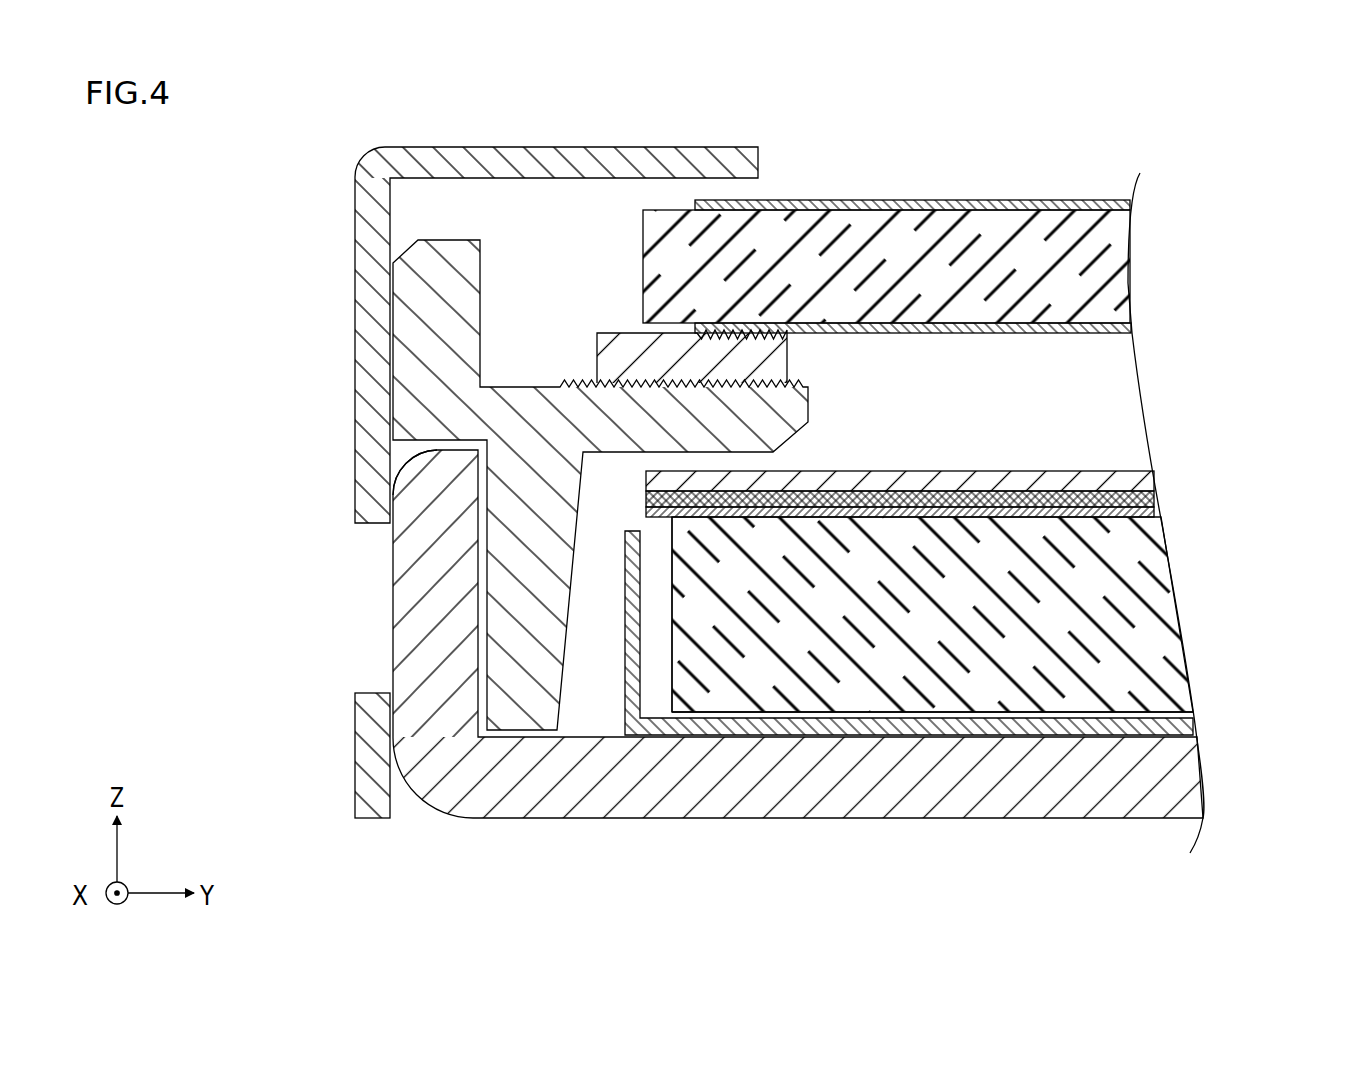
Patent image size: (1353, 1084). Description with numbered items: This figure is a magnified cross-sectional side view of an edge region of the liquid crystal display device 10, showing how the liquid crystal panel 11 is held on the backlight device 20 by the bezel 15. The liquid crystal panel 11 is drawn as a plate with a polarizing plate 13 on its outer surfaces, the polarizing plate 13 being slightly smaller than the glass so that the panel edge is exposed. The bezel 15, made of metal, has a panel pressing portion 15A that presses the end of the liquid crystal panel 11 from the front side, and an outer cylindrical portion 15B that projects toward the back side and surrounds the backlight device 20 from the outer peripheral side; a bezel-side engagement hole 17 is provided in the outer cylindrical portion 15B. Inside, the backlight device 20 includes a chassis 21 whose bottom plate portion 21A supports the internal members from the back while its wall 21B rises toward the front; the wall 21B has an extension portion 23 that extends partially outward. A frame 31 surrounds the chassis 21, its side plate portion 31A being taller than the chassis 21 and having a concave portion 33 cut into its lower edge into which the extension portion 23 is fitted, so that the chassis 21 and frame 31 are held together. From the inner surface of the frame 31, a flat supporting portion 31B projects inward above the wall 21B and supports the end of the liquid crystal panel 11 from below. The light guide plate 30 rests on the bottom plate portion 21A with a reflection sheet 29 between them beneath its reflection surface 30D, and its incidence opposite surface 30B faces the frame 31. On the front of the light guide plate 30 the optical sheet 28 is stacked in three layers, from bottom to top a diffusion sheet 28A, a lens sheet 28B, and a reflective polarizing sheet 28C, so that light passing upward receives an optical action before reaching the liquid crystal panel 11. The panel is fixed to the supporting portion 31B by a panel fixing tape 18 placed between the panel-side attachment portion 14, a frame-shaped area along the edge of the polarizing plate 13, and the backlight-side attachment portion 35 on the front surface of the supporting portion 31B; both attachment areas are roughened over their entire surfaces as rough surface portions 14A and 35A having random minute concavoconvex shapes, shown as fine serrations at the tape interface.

The liquid crystal display device 10 is at (933, 142).
The liquid crystal panel 11 is at (982, 198).
The polarizing plate 13 is at (1092, 320).
The panel-side attachment portion 14 is at (886, 228).
The rough surface portion 14A is at (760, 352).
The bezel 15 is at (485, 313).
The panel pressing portion 15A is at (430, 157).
The outer cylindrical portion 15B is at (367, 198).
The bezel-side engagement hole 17 is at (375, 690).
The panel fixing tape 18 is at (667, 353).
The backlight device 20 is at (739, 697).
The chassis 21 is at (798, 801).
The bottom plate portion 21A is at (577, 792).
The wall 21B is at (443, 657).
The extension portion 23 is at (413, 592).
The optical sheet 28 is at (989, 499).
The diffusion sheet 28A is at (1160, 517).
The lens sheet 28B is at (1160, 498).
The reflective polarizing sheet 28C is at (1157, 483).
The reflection sheet 29 is at (1122, 727).
The light guide plate 30 is at (913, 717).
The incidence opposite surface 30B is at (672, 626).
The reflection surface 30D is at (1012, 713).
The frame 31 is at (518, 485).
The side plate portion 31A is at (422, 307).
The supporting portion 31B is at (527, 405).
The concave portion 33 is at (422, 470).
The backlight-side attachment portion 35 is at (669, 239).
The rough surface portion 35A is at (627, 382).